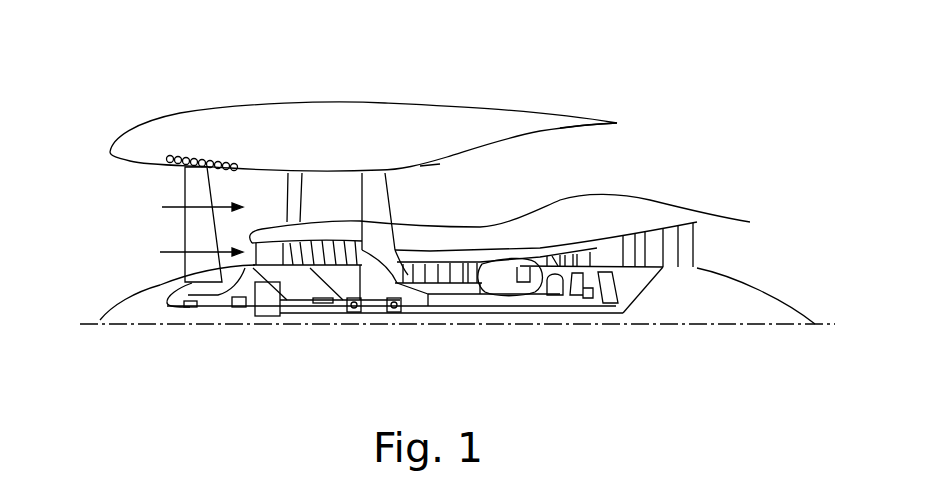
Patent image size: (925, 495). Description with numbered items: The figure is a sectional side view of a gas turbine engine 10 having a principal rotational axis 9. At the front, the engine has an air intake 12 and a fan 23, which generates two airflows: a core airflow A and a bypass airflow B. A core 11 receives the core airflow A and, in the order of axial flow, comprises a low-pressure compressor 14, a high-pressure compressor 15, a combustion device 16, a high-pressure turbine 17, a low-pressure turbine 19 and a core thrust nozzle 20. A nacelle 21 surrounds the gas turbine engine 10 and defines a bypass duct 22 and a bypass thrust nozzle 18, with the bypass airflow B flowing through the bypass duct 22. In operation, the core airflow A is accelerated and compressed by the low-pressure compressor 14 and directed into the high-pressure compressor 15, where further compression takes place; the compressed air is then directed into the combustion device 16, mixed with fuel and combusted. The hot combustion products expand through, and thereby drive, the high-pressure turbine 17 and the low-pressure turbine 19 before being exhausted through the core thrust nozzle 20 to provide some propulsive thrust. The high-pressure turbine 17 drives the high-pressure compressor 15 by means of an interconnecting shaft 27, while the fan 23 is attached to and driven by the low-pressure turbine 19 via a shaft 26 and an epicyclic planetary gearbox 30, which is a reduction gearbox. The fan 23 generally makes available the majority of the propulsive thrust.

The principal rotational axis 9 is at (718, 327).
The gas turbine engine 10 is at (160, 118).
The core 11 is at (519, 232).
The air intake 12 is at (112, 176).
The low-pressure compressor 14 is at (320, 247).
The high-pressure compressor 15 is at (447, 272).
The combustion device 16 is at (505, 278).
The high-pressure turbine 17 is at (560, 252).
The bypass thrust nozzle 18 is at (711, 121).
The low-pressure turbine 19 is at (673, 258).
The core thrust nozzle 20 is at (761, 253).
The nacelle 21 is at (373, 112).
The bypass duct 22 is at (610, 161).
The fan 23 is at (190, 241).
The shaft 26 is at (413, 316).
The interconnecting shaft 27 is at (472, 306).
The epicyclic planetary gearbox 30 is at (268, 318).